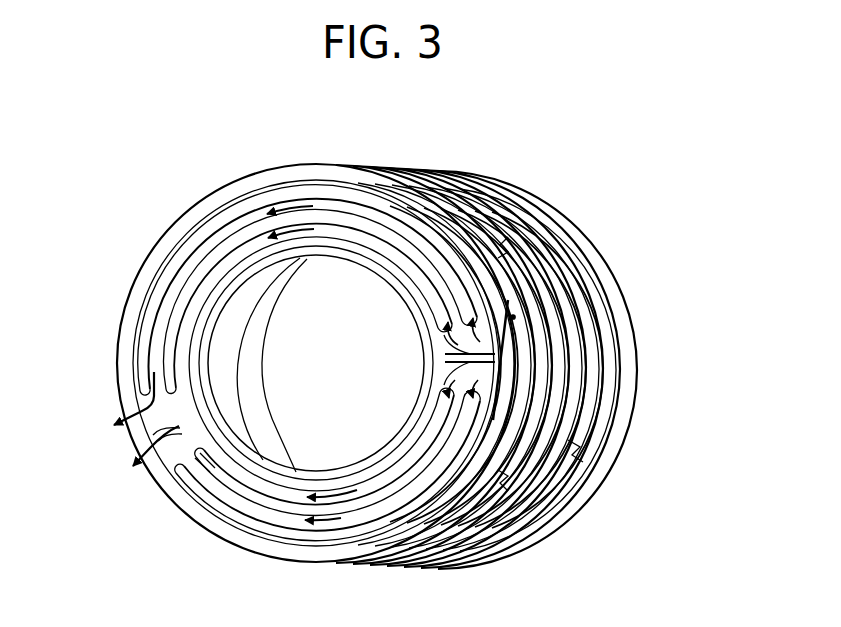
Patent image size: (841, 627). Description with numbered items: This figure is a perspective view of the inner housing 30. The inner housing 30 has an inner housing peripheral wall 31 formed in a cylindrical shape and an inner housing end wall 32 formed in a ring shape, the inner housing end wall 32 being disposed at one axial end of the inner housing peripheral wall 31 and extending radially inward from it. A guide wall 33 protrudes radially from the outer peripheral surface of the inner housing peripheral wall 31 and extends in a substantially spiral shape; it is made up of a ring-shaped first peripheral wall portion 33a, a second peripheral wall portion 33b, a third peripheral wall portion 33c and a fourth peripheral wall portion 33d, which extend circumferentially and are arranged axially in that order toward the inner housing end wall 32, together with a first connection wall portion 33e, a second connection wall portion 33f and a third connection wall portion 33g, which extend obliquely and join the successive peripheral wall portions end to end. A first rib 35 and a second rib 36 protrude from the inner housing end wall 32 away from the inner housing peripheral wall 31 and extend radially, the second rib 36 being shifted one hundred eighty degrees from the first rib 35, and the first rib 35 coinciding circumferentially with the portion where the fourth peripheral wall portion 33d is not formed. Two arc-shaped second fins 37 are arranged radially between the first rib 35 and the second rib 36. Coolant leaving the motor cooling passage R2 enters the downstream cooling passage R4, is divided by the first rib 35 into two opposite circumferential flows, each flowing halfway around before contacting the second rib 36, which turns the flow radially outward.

The inner housing 30 is at (158, 182).
The inner housing peripheral wall 31 is at (553, 214).
The inner housing end wall 32 is at (178, 453).
The guide wall 33 is at (580, 450).
The first peripheral wall portion 33a is at (574, 486).
The second peripheral wall portion 33b is at (550, 508).
The third peripheral wall portion 33c is at (504, 498).
The fourth peripheral wall portion 33d is at (449, 503).
The first connection wall portion 33e is at (590, 425).
The second connection wall portion 33f is at (560, 380).
The third connection wall portion 33g is at (525, 352).
The first rib 35 is at (438, 370).
The second rib 36 is at (168, 425).
The second fins 37 is at (256, 232).
The motor cooling passage R2 is at (517, 318).
The downstream cooling passage R4 is at (165, 302).